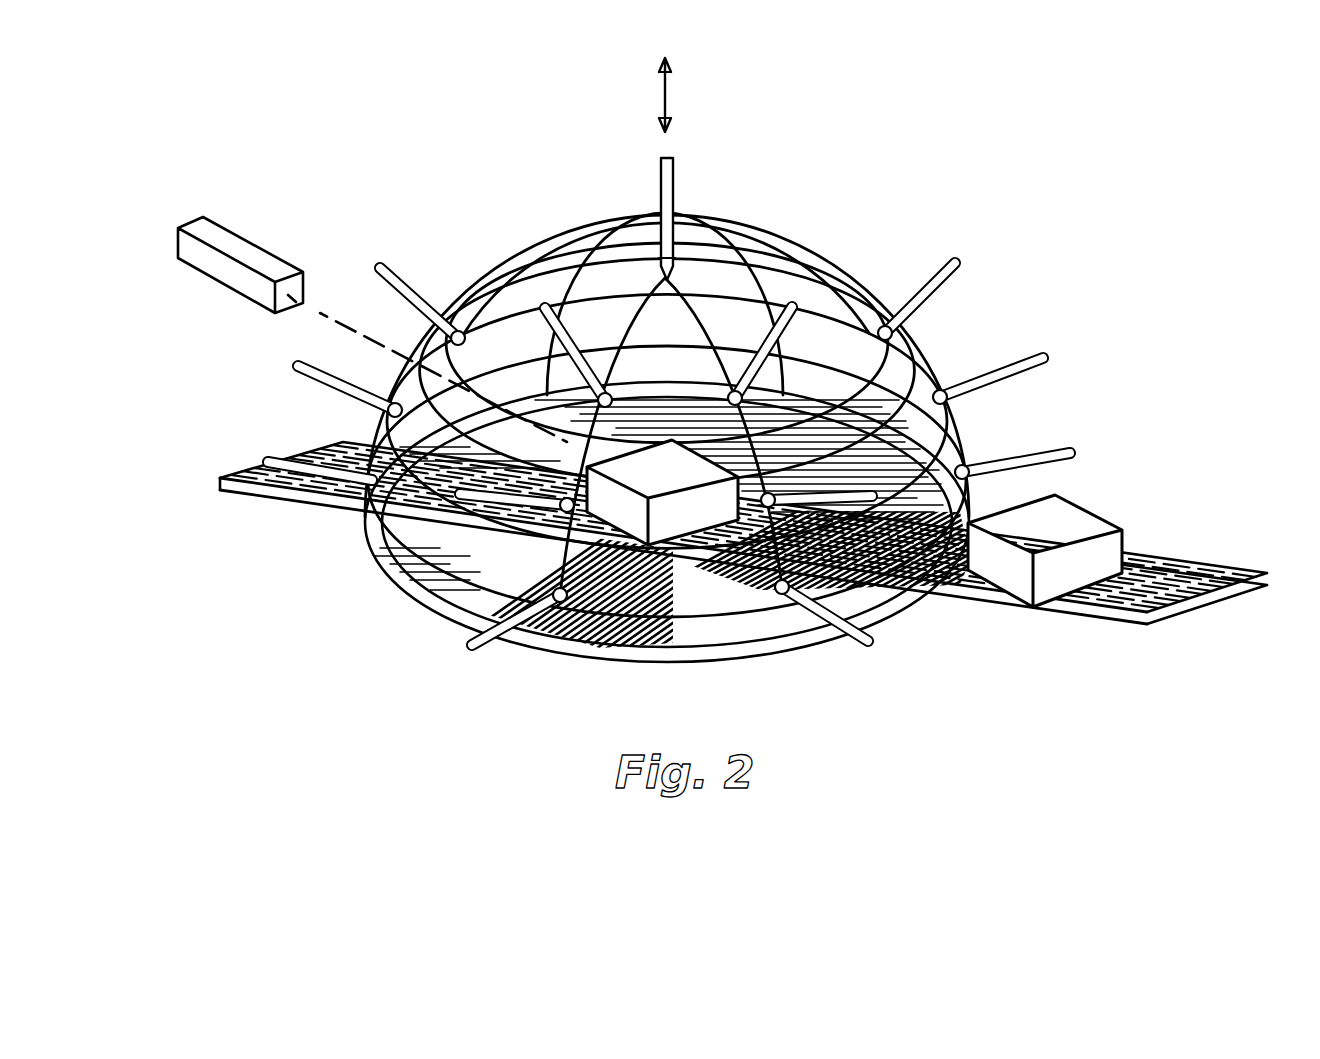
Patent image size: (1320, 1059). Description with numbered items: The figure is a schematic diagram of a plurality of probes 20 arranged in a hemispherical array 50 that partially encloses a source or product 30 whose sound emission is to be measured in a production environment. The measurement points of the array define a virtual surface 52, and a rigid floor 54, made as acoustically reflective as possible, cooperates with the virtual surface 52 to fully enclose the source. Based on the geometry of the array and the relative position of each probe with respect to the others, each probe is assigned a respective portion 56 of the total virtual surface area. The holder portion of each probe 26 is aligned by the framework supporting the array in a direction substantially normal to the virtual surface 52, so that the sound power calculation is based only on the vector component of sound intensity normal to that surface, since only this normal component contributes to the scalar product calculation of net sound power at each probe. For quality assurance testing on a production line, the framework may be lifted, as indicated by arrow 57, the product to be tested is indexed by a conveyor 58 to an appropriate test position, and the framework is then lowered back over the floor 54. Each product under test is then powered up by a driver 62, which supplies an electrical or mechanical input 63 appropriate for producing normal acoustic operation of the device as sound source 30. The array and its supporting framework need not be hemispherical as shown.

The probes 20 is at (940, 385).
The probe holder portion 26 is at (908, 613).
The source or product 30 is at (660, 477).
The array 50 is at (350, 695).
The virtual surface 52 is at (807, 240).
The rigid floor 54 is at (728, 648).
The portion of virtual surface area 56 is at (637, 618).
The arrow 57 is at (668, 102).
The conveyor 58 is at (1157, 553).
The driver 62 is at (245, 250).
The electrical or mechanical input 63 is at (320, 313).